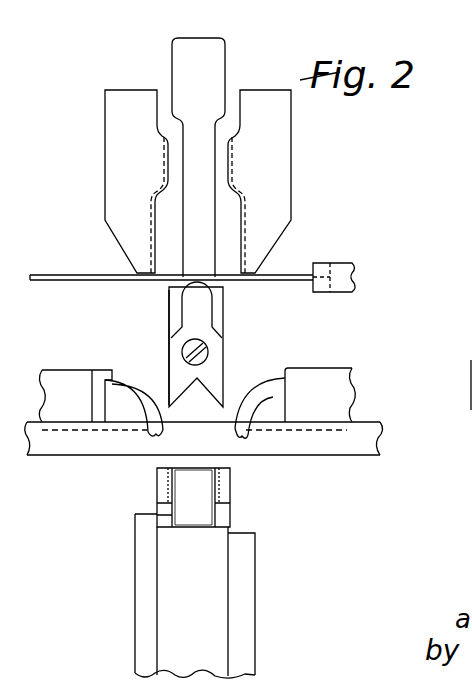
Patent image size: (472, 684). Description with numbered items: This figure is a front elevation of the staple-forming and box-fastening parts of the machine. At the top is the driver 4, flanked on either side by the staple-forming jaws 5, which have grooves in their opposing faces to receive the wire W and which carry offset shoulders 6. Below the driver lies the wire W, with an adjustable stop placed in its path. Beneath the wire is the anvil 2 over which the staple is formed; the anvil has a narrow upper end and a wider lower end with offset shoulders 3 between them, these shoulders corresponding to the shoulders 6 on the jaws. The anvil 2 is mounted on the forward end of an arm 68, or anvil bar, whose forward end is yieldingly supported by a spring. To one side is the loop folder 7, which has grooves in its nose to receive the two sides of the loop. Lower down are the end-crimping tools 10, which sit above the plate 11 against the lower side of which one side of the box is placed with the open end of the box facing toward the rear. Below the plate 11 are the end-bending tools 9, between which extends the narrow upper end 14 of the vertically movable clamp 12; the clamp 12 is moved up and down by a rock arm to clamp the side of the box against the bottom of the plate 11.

The anvil 2 is at (208, 373).
The offset shoulders 3 is at (213, 327).
The driver 4 is at (215, 73).
The staple-forming jaws 5 is at (160, 146).
The offset shoulders 6 is at (152, 198).
The loop folder 7 is at (340, 263).
The end-bending tools 9 is at (225, 492).
The end-crimping tools 10 is at (118, 407).
The plate 11 is at (420, 440).
The vertically movable clamp 12 is at (217, 610).
The narrow upper end 14 is at (190, 517).
The arm 68 is at (170, 312).
The wire w is at (70, 275).